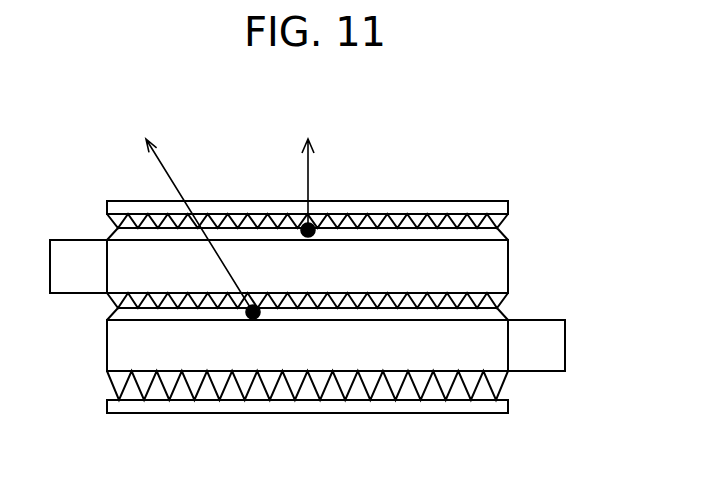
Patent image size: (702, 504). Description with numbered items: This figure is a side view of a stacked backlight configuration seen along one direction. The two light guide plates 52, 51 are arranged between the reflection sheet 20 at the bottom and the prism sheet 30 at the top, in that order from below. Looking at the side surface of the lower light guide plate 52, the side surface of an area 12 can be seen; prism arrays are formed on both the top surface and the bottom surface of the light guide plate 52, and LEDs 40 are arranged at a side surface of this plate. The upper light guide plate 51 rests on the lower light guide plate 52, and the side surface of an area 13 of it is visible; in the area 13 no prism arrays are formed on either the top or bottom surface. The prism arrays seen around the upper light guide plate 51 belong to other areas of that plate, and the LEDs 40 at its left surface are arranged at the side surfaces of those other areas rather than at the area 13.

The area 12 is at (225, 355).
The area 13 is at (262, 260).
The reflection sheet 20 is at (380, 414).
The prism sheet 30 is at (447, 201).
The LED 40 is at (76, 240).
The light guide plate 51 is at (508, 265).
The light guide plate 52 is at (107, 348).